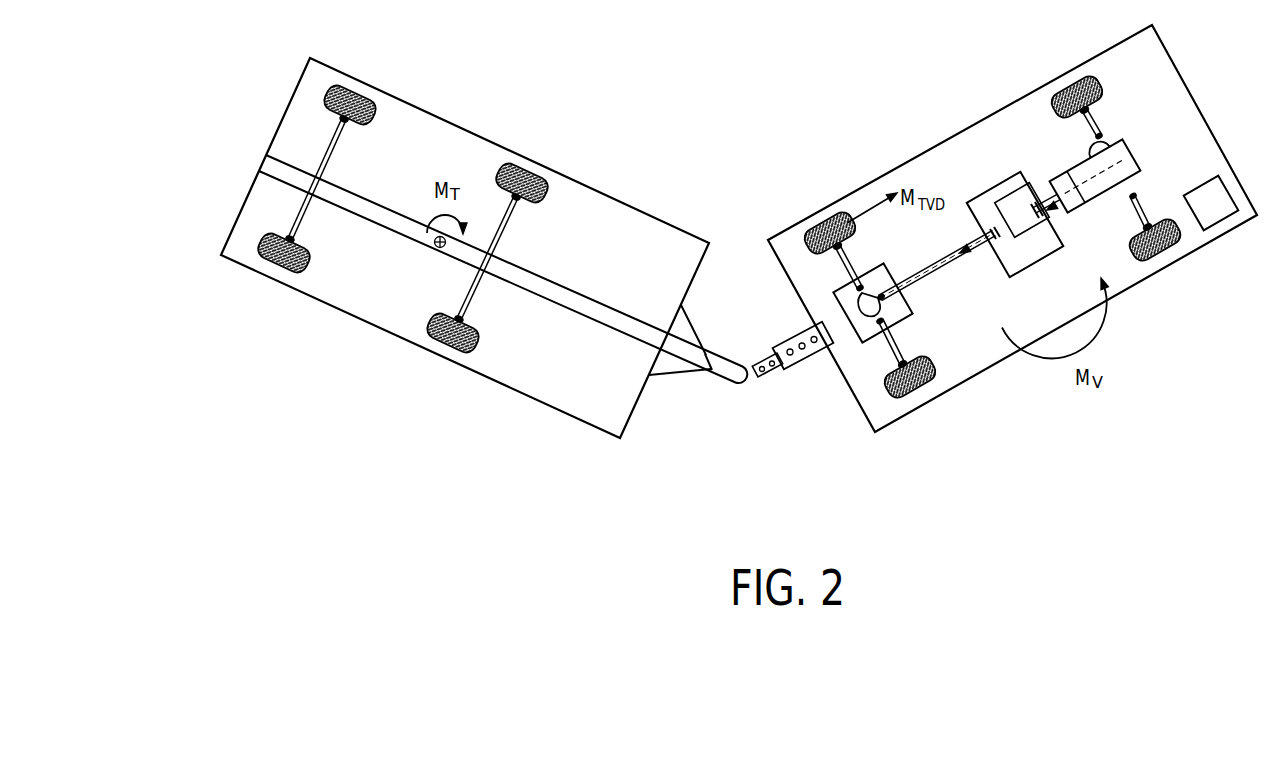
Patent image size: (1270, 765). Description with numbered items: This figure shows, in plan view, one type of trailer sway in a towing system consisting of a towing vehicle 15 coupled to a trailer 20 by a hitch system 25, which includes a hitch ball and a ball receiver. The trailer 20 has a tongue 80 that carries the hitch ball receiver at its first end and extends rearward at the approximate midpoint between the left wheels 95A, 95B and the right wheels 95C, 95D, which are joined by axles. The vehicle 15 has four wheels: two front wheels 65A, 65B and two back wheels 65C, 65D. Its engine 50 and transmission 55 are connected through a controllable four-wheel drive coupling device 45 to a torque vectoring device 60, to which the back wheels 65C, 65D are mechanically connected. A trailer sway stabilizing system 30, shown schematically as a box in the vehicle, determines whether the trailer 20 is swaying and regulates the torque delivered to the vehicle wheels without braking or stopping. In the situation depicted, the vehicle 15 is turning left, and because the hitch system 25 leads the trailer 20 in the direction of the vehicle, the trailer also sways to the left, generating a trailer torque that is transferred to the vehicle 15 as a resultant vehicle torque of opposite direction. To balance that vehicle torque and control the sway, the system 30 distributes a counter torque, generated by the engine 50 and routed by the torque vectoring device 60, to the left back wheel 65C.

The towing vehicle 15 is at (980, 121).
The trailer 20 is at (490, 141).
The hitch system 25 is at (745, 368).
The trailer sway stabilizing system 30 is at (1211, 203).
The controllable four-wheel drive coupling device 45 is at (1020, 228).
The engine 50 is at (1130, 162).
The transmission 55 is at (1055, 206).
The torque vectoring device 60 is at (880, 305).
The front wheel 65A is at (1072, 85).
The front wheel 65B is at (1163, 256).
The left back wheel 65C is at (822, 222).
The back wheel 65D is at (915, 392).
The tongue 80 is at (590, 297).
The left trailer wheel 95A is at (540, 170).
The left trailer wheel 95B is at (358, 93).
The right trailer wheel 95C is at (455, 348).
The right trailer wheel 95D is at (282, 268).